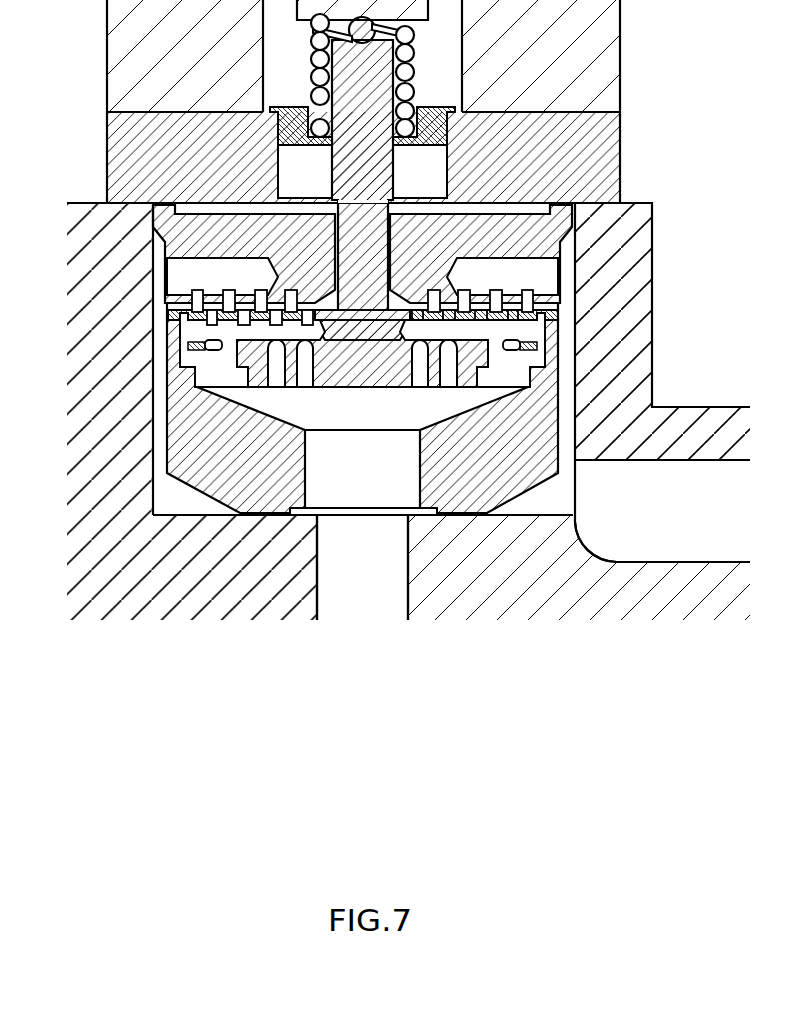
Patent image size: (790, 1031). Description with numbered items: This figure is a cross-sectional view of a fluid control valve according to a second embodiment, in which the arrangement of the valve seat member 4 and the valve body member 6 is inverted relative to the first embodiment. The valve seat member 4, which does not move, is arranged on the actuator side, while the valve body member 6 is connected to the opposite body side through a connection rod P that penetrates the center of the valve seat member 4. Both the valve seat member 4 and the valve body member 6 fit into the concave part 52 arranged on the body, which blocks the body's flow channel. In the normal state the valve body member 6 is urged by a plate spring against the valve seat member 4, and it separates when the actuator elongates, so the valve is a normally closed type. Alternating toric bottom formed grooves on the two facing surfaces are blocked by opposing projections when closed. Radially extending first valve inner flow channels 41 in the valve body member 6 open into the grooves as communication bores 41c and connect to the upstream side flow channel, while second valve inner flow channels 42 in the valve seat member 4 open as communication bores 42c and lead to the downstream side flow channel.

The connection rod P is at (395, 170).
The valve seat member 4 is at (580, 240).
The concave part 52 is at (152, 443).
The second valve inner flow channel 42 is at (223, 273).
The communication bore 42c is at (188, 288).
The first valve inner flow channel 41 is at (432, 335).
The communication bore 41c is at (508, 360).
The valve body member 6 is at (346, 388).